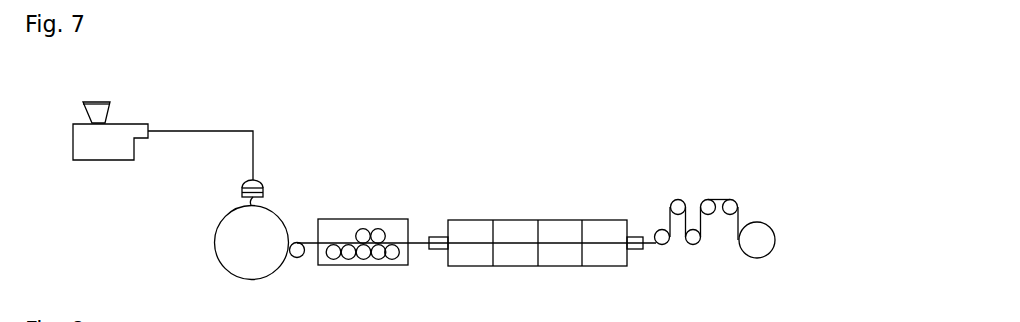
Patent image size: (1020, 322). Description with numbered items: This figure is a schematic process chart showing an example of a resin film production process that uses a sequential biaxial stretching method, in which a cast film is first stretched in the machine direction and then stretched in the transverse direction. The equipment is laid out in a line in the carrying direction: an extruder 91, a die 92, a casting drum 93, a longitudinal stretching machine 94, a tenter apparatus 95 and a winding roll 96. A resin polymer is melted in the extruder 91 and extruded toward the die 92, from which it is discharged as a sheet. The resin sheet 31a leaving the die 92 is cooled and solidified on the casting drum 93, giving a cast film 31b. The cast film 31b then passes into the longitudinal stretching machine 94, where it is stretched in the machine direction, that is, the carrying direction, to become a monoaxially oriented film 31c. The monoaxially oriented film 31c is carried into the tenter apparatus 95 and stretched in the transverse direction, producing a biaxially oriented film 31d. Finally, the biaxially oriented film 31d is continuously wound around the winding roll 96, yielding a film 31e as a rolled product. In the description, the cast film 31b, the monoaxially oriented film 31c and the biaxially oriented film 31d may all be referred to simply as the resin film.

The extruder 91 is at (138, 95).
The die 92 is at (244, 144).
The casting drum 93 is at (262, 222).
The longitudinal stretching machine 94 is at (382, 195).
The tenter apparatus 95 is at (536, 197).
The winding roll 96 is at (777, 223).
The resin sheet 31a is at (222, 267).
The cast film 31b is at (305, 257).
The monoaxially oriented film 31c is at (408, 247).
The biaxially oriented film 31d is at (648, 247).
The film as a rolled product 31e is at (758, 258).